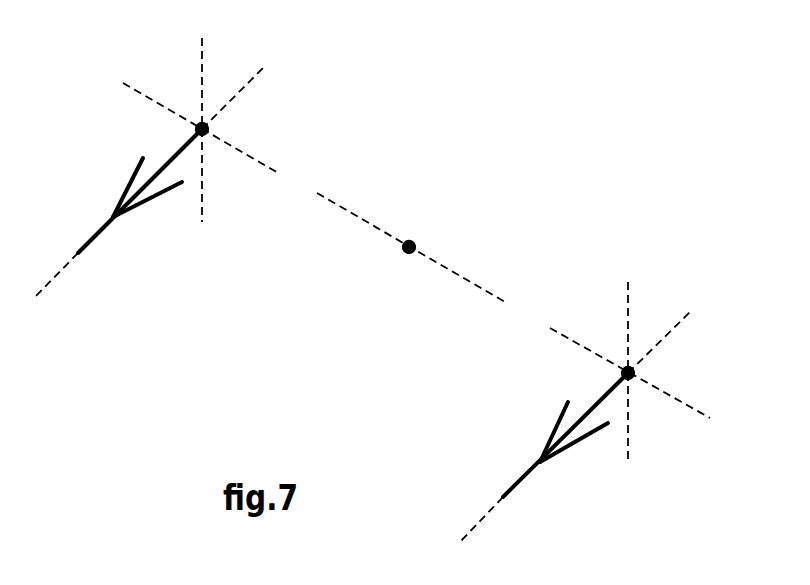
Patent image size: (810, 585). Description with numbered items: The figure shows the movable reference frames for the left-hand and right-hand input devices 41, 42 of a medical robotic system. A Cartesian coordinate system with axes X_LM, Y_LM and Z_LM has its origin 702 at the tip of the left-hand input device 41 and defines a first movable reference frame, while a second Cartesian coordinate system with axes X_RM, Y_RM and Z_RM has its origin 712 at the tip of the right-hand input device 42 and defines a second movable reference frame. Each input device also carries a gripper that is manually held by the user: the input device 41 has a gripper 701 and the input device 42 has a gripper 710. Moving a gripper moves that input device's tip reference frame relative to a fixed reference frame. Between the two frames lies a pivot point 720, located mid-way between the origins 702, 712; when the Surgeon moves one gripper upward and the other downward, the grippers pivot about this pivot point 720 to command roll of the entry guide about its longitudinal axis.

The left-hand input device 41 is at (285, 105).
The right-hand input device 42 is at (685, 358).
The gripper 701 is at (103, 229).
The origin 702 is at (192, 111).
The gripper 710 is at (527, 472).
The origin 712 is at (621, 359).
The pivot point 720 is at (424, 226).